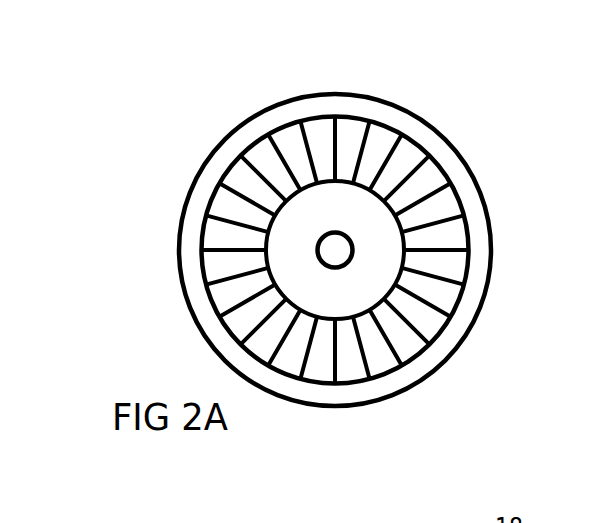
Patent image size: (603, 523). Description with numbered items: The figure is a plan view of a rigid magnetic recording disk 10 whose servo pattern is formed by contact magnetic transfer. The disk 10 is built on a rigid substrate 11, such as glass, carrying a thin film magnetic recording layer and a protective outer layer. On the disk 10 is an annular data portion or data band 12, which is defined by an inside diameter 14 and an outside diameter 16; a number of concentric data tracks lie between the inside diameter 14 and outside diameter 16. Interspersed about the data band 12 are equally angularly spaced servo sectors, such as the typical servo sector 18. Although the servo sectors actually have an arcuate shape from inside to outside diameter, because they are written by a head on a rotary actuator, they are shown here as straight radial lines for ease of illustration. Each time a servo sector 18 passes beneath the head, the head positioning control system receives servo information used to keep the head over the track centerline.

The magnetic recording disk 10 is at (460, 128).
The rigid substrate 11 is at (474, 175).
The annular data band 12 is at (383, 137).
The inside diameter 14 is at (280, 208).
The outside diameter 16 is at (225, 170).
The servo sector 18 is at (337, 372).